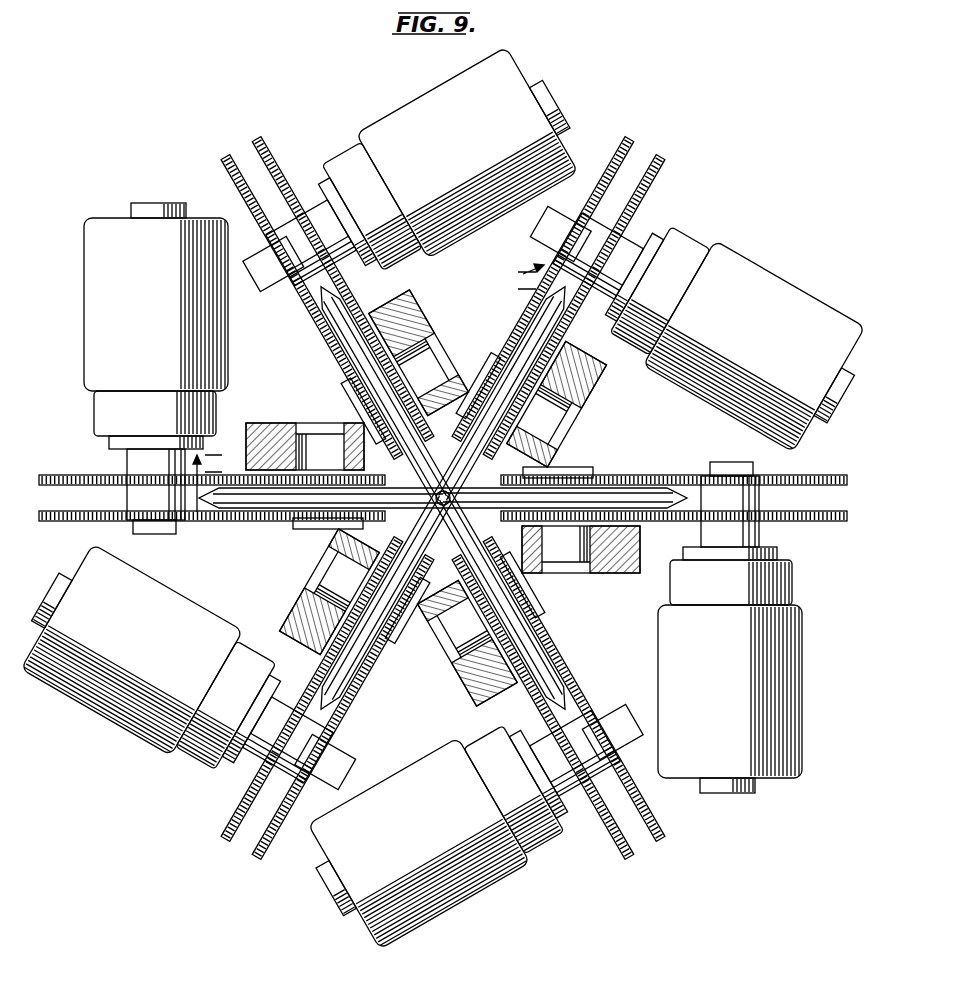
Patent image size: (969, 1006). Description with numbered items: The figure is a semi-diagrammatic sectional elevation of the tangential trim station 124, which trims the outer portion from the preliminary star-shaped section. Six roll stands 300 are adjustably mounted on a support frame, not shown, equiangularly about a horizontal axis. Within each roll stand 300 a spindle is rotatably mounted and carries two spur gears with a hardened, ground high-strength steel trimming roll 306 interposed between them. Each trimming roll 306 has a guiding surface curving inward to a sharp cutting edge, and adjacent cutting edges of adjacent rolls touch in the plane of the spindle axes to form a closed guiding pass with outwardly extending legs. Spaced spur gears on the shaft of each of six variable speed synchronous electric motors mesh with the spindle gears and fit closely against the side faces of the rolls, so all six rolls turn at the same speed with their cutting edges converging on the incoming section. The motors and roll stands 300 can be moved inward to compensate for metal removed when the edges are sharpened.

The tangential trim station 124 is at (684, 212).
The roll stand 300 is at (473, 682).
The trimming roll 306 is at (455, 513).